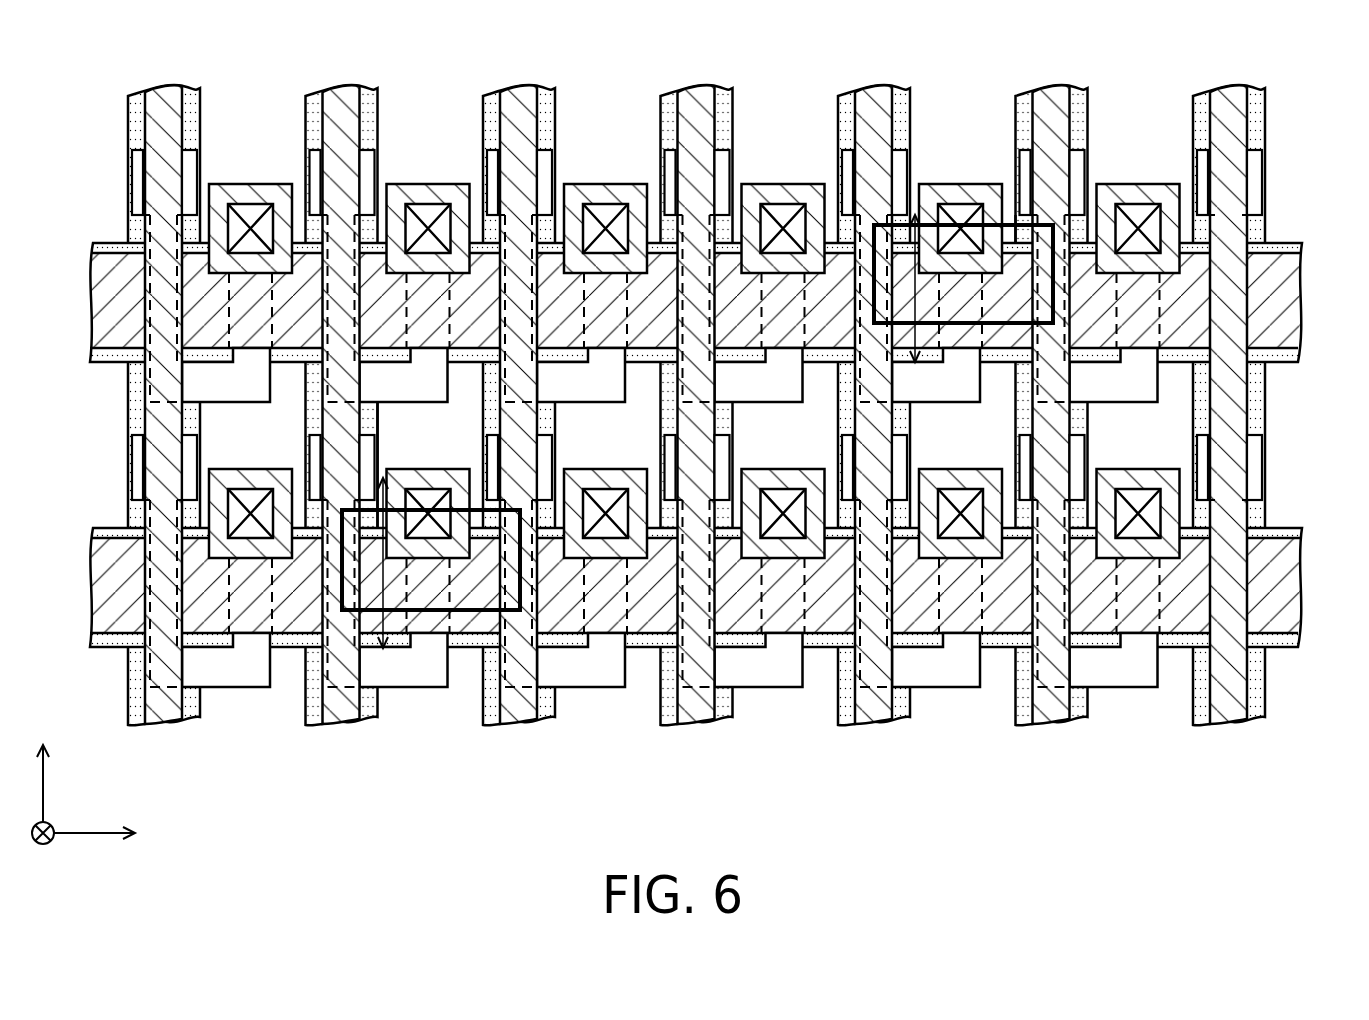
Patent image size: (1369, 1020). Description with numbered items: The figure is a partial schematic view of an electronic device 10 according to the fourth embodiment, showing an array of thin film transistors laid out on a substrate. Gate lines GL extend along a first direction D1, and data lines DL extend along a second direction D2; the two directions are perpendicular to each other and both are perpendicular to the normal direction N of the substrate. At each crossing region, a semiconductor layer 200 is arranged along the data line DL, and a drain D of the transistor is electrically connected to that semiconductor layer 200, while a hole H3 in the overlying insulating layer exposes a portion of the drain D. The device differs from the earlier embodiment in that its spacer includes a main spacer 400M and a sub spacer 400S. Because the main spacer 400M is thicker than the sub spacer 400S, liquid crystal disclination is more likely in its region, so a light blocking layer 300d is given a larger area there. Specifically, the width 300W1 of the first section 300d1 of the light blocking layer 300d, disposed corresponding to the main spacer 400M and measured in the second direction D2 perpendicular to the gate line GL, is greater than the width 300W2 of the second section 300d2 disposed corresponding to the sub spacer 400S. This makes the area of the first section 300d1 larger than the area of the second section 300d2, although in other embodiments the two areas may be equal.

The data line DL is at (166, 95).
The light blocking layer 300d is at (135, 126).
The semiconductor layer 200 is at (138, 176).
The hole H3 is at (251, 200).
The drain D is at (280, 193).
The gate line GL is at (103, 295).
The first section of the light blocking layer 300d1 is at (483, 476).
The second section of the light blocking layer 300d2 is at (1010, 218).
The width of the first section 300W1 is at (385, 582).
The width of the second section 300W2 is at (916, 286).
The main spacer 400M is at (458, 613).
The sub spacer 400S is at (1055, 236).
The electronic device 10 is at (1368, 798).
The first direction D1 is at (115, 837).
The second direction D2 is at (49, 763).
The normal direction N is at (44, 853).